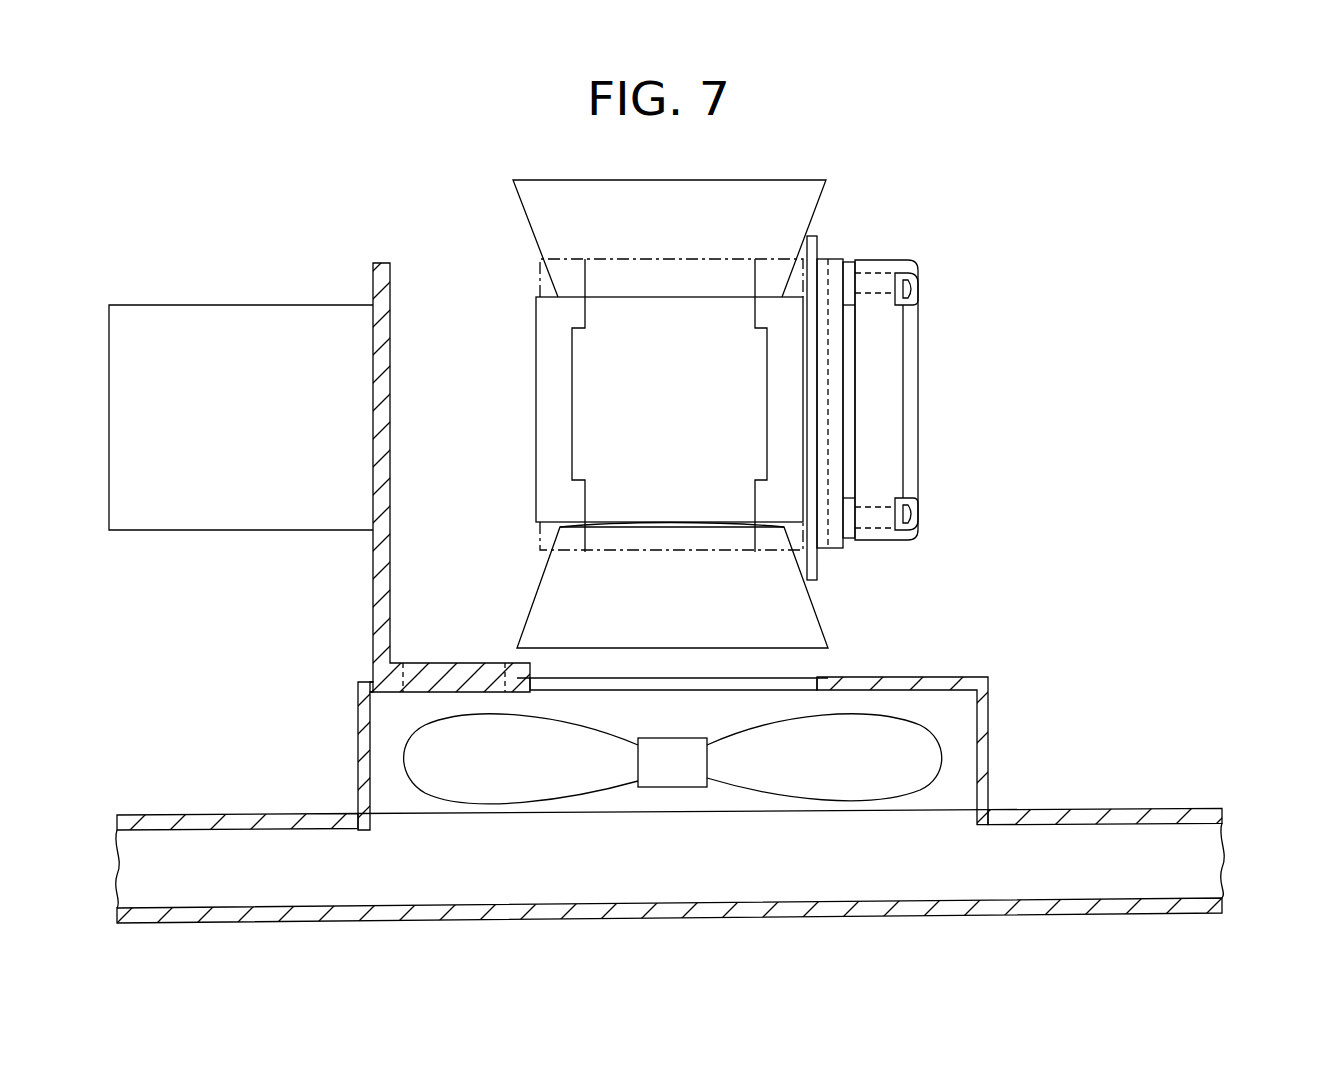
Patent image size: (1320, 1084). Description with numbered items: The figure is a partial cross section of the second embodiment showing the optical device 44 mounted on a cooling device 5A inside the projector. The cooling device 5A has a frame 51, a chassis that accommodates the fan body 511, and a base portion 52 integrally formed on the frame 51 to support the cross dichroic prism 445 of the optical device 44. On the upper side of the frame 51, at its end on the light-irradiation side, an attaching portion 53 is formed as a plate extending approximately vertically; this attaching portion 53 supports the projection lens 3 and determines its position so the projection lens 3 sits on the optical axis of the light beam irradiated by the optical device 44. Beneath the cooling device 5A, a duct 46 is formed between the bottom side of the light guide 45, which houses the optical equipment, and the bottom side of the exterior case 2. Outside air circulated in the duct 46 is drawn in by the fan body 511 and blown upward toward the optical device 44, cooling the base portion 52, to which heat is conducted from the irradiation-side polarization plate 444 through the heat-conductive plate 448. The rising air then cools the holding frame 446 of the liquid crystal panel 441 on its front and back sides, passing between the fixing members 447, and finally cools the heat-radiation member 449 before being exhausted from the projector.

The exterior case 2 is at (1198, 902).
The projection lens 3 is at (197, 325).
The optical device 44 is at (1093, 208).
The light guide 45 is at (1142, 809).
The duct 46 is at (1207, 858).
The frame 51 is at (980, 697).
The base portion 52 is at (805, 622).
The attaching portion 53 is at (381, 263).
The liquid crystal panel 441 is at (978, 310).
The irradiation-side polarization plate 444 is at (950, 200).
The cross dichroic prism 445 is at (537, 357).
The holding frame 446 is at (892, 353).
The fixing member 447 is at (830, 254).
The heat-conductive plate 448 is at (812, 234).
The heat-radiation member 449 is at (670, 202).
The fan body 511 is at (953, 756).
The cooling device 5A is at (1111, 623).